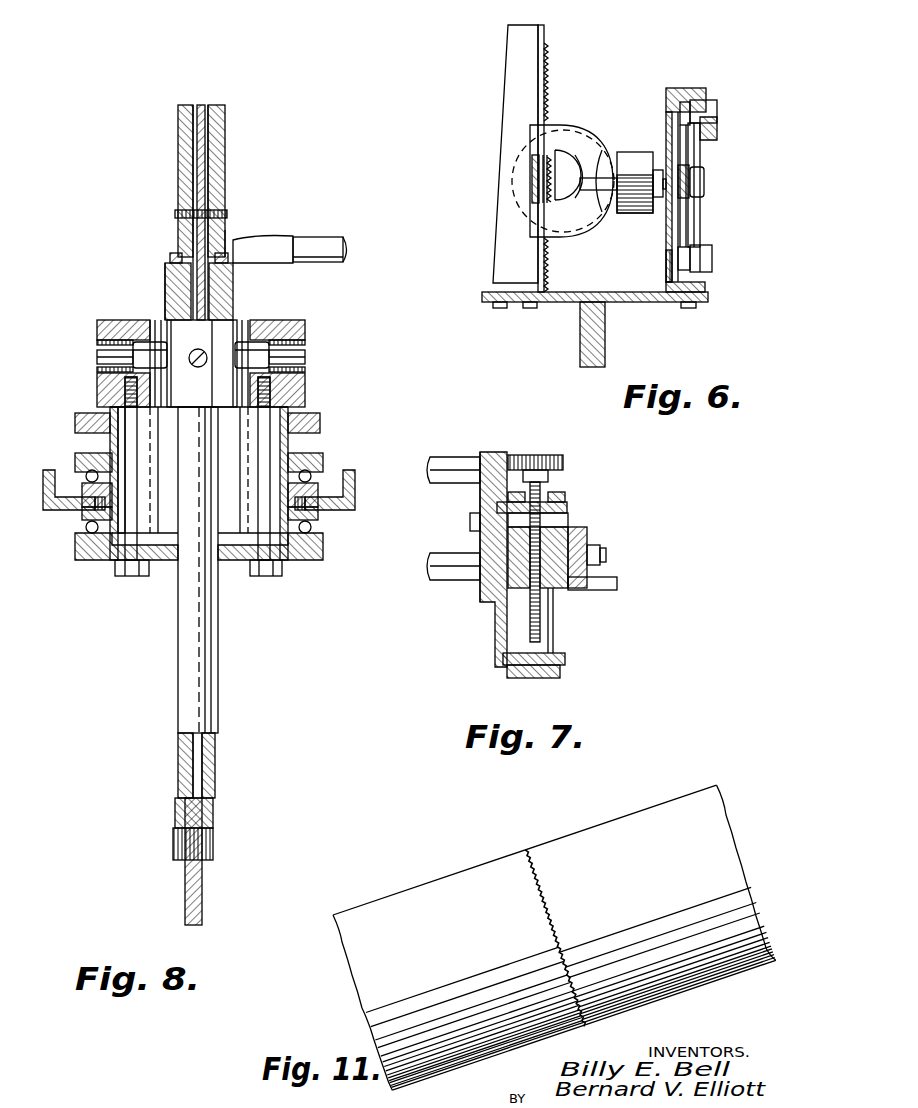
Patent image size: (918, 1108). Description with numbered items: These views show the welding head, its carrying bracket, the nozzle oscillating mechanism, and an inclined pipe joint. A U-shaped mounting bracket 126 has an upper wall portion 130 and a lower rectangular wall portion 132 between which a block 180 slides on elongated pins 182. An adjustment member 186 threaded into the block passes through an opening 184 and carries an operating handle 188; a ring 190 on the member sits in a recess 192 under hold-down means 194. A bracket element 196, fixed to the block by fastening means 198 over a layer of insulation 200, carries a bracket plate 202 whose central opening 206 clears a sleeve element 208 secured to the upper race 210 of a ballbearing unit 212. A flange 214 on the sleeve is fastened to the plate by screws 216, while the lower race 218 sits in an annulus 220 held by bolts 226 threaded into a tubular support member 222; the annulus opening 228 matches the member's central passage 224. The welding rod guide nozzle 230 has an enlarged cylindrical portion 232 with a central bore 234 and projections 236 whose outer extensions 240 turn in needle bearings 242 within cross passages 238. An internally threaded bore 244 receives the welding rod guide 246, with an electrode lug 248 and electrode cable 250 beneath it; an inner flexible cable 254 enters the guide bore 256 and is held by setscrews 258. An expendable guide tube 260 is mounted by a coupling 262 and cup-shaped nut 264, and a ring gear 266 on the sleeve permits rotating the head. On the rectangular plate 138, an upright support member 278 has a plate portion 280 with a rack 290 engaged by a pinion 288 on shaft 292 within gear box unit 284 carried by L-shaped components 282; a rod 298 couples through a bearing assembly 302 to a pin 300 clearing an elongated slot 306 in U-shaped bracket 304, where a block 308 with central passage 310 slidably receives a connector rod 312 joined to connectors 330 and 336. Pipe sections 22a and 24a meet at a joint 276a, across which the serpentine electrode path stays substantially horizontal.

In FIG. 8, the inner flexible cable 254 is at (192, 165).
In FIG. 8, the setscrews 258 is at (176, 215).
In FIG. 8, the bore 256 is at (176, 253).
In FIG. 8, the welding rod guide 246 is at (227, 238).
In FIG. 8, the electrode lug 248 is at (280, 236).
In FIG. 8, the electrode cable 250 is at (333, 248).
In FIG. 8, the internally threaded bore 244 is at (167, 278).
In FIG. 8, the enlarged cylindrical portion 232 is at (165, 290).
In FIG. 8, the central bore 234 is at (238, 300).
In FIG. 8, the central passage 224 is at (244, 320).
In FIG. 8, the tubular support member 222 is at (305, 328).
In FIG. 8, the projections 236 is at (150, 352).
In FIG. 8, the cross passages 238 is at (305, 345).
In FIG. 8, the outer extensions 240 is at (295, 358).
In FIG. 8, the needle bearings 242 is at (305, 382).
In FIG. 8, the sleeve element 208 is at (305, 402).
In FIG. 8, the ring gear 266 is at (318, 422).
In FIG. 8, the ballbearing unit 212 is at (75, 455).
In FIG. 8, the upper race 210 is at (318, 453).
In FIG. 8, the central opening 206 is at (310, 476).
In FIG. 8, the bracket plate 202 is at (355, 483).
In FIG. 8, the flange 214 is at (330, 512).
In FIG. 8, the screws 216 is at (322, 520).
In FIG. 8, the lower race 218 is at (320, 548).
In FIG. 8, the annulus 220 is at (300, 560).
In FIG. 8, the bolts 226 is at (138, 470).
In FIG. 8, the central opening 228 is at (152, 540).
In FIG. 8, the welding rod guide nozzle 230 is at (218, 640).
In FIG. 8, the coupling 262 is at (214, 822).
In FIG. 8, the cup-shaped nut 264 is at (214, 848).
In FIG. 8, the expendable guide tube 260 is at (204, 890).
In FIG. 6, the upright support member 278 is at (510, 100).
In FIG. 6, the rectangular plate portion 280 is at (544, 32).
In FIG. 6, the rack 290 is at (549, 62).
In FIG. 6, the L-shaped components 282 is at (571, 164).
In FIG. 6, the gear box unit 284 is at (580, 128).
In FIG. 6, the shaft 292 is at (538, 178).
In FIG. 6, the pinion 288 is at (580, 212).
In FIG. 6, the rod 298 is at (598, 178).
In FIG. 6, the bearing assembly 302 is at (641, 152).
In FIG. 6, the U-shaped bracket 304 is at (698, 78).
In FIG. 6, the connector 330 is at (718, 104).
In FIG. 6, the central passage 310 is at (702, 165).
In FIG. 6, the block 308 is at (705, 182).
In FIG. 6, the connector rod 312 is at (700, 226).
In FIG. 6, the connector 336 is at (713, 256).
In FIG. 6, the elongated slot 306 is at (667, 260).
In FIG. 6, the pin 300 is at (658, 197).
In FIG. 6, the rectangular plate 138 is at (590, 292).
In FIG. 7, the mounting bracket 126 is at (494, 640).
In FIG. 7, the hold-down means 194 is at (500, 462).
In FIG. 7, the operating handle 188 is at (540, 455).
In FIG. 7, the adjustment member 186 is at (560, 492).
In FIG. 7, the upper wall portion 130 is at (566, 500).
In FIG. 7, the opening 184 is at (568, 515).
In FIG. 7, the block 180 is at (568, 530).
In FIG. 7, the layer of insulation 200 is at (587, 540).
In FIG. 7, the bracket element 196 is at (600, 552).
In FIG. 7, the fastening means 198 is at (604, 556).
In FIG. 7, the ring 190 is at (497, 508).
In FIG. 7, the recess 192 is at (475, 520).
In FIG. 7, the pins 182 is at (541, 626).
In FIG. 7, the lower rectangular wall portion 132 is at (560, 658).
In FIG. 11, the pipe section 22a is at (400, 890).
In FIG. 11, the joint 276a is at (526, 848).
In FIG. 11, the pipe section 24a is at (597, 820).